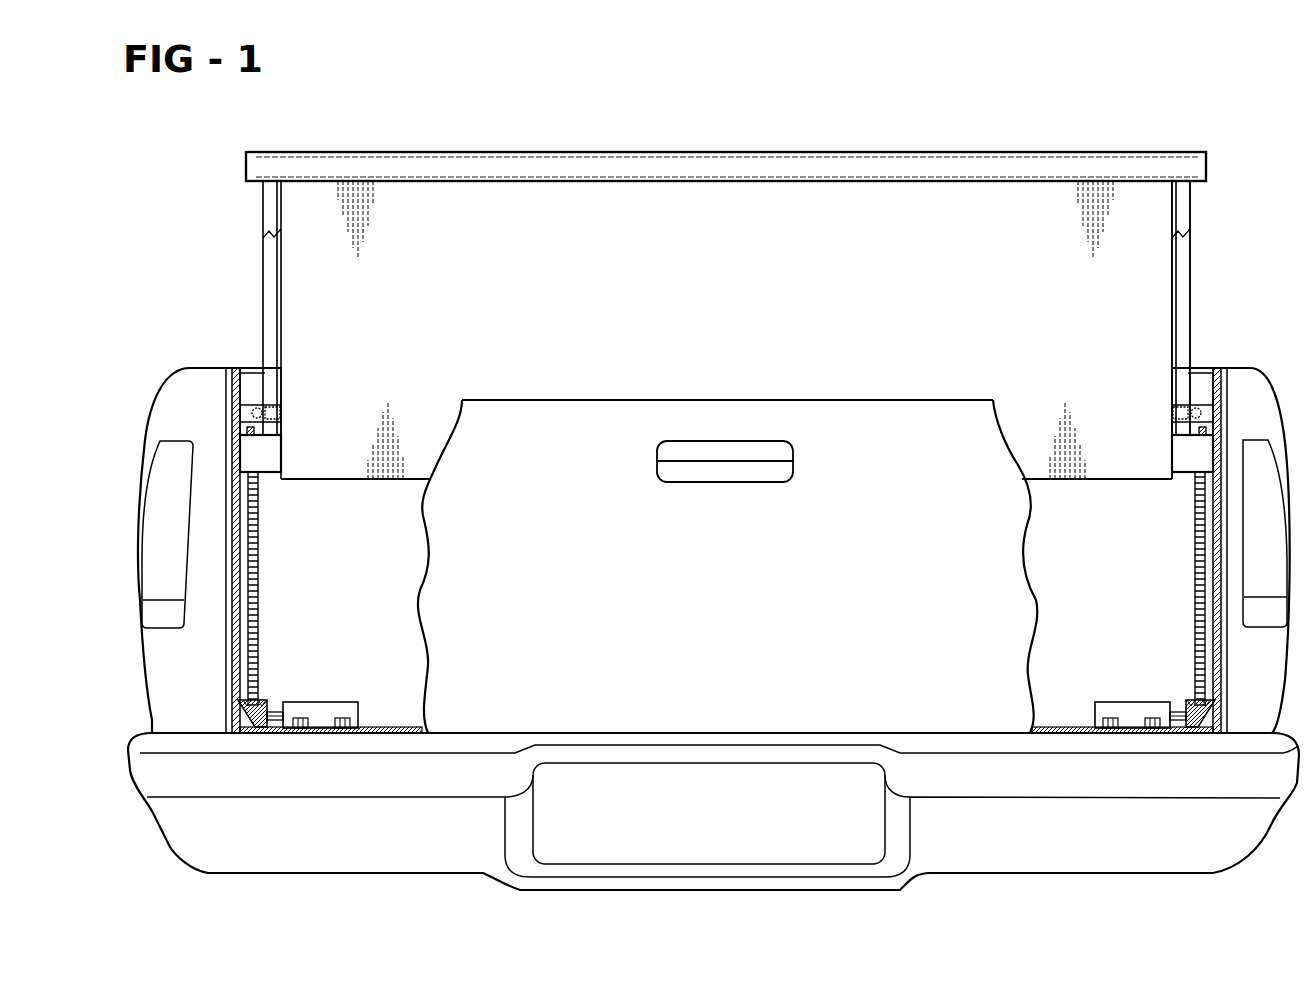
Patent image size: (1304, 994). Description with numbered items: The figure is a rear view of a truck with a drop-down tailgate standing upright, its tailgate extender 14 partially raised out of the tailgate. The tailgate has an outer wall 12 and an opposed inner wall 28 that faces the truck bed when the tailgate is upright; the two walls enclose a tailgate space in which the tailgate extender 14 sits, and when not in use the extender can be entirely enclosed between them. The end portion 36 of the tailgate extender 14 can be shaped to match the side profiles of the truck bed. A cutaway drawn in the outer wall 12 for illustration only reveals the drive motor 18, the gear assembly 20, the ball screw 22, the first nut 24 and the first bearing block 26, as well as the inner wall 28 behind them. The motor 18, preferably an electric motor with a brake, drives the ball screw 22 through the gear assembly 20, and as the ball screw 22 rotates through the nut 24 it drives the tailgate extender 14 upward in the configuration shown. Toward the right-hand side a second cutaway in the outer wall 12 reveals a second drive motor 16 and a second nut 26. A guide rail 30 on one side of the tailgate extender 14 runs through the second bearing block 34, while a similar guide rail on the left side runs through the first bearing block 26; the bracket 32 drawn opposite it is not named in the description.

The outer wall 12 is at (730, 607).
The tailgate extender 14 is at (636, 241).
The second drive motor 16 is at (1128, 728).
The drive motor 18 is at (313, 728).
The gear assembly 20 is at (270, 703).
The ball screw 22 is at (260, 512).
The first nut 24 is at (252, 448).
The first bearing block 26 is at (1187, 447).
The inner wall 28 is at (393, 607).
The guide rail 30 is at (1183, 278).
The left latch / guide bracket 32 is at (278, 413).
The second bearing block 34 is at (1172, 412).
The end portion 36 is at (850, 162).